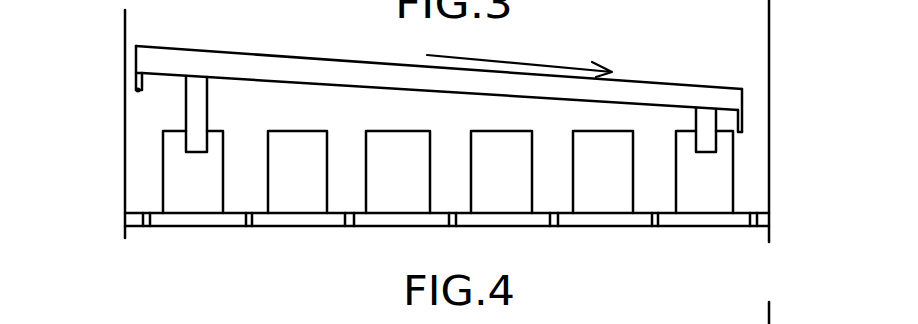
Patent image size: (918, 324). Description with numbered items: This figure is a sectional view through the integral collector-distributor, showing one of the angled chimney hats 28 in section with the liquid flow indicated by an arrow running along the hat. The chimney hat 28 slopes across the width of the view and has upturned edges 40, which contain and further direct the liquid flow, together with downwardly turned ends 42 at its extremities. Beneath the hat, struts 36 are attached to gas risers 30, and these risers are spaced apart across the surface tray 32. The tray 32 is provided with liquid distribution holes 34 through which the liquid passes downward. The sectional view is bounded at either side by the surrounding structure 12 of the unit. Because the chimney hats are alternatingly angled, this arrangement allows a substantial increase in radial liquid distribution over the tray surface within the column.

The housing frame 12 is at (123, 14).
The chimney hat 28 is at (316, 50).
The gas riser 30 is at (192, 173).
The tray 32 is at (766, 223).
The liquid distribution holes 34 is at (352, 227).
The strut 36 is at (196, 108).
The upturned edge 40 is at (150, 63).
The downwardly turned end 42 is at (137, 89).